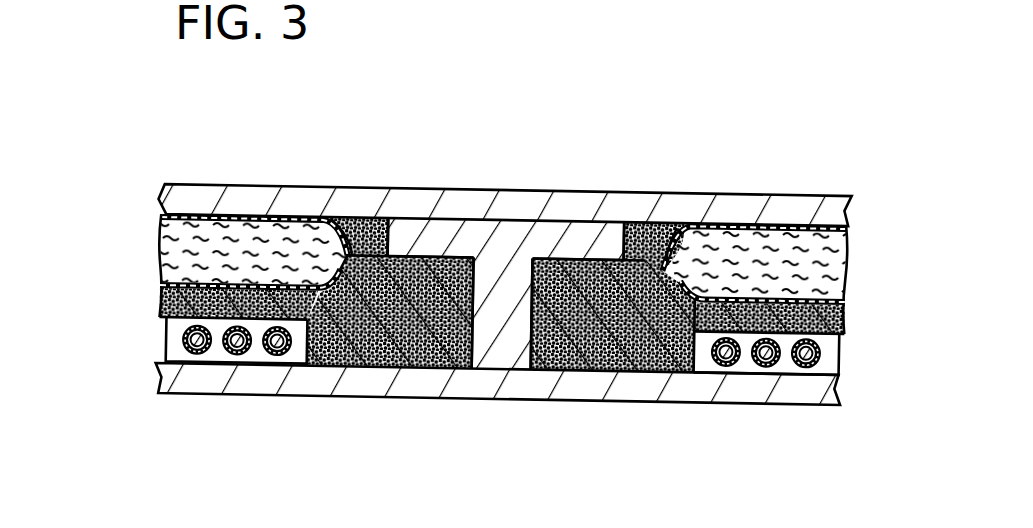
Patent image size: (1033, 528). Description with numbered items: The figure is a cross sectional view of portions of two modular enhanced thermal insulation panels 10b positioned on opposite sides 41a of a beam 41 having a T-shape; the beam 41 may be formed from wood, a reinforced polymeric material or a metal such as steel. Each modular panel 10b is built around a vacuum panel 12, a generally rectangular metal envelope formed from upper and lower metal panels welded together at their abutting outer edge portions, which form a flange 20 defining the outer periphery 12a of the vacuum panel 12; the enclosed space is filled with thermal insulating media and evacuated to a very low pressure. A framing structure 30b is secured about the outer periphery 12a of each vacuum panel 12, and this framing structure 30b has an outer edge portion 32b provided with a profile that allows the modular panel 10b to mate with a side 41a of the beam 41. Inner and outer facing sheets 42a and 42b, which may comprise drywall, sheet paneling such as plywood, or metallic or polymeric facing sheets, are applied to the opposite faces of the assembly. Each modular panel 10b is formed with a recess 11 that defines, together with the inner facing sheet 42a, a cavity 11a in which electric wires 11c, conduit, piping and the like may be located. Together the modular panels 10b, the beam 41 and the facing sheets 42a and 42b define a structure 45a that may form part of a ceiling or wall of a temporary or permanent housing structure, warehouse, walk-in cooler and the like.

The structure 45a is at (536, 161).
The outer facing sheet 42b is at (797, 199).
The inner facing sheet 42a is at (603, 389).
The outer edge portion 32b is at (478, 338).
The beam 41 is at (397, 247).
The side of the beam 41a is at (452, 256).
The framing structure 30b is at (343, 343).
The outer periphery 12a is at (360, 256).
The vacuum panel 12 is at (263, 208).
The flange 20 is at (351, 253).
The modular panel 10b is at (148, 263).
The recess 11 is at (166, 323).
The cavity 11a is at (147, 351).
The electric wires 11c is at (198, 356).